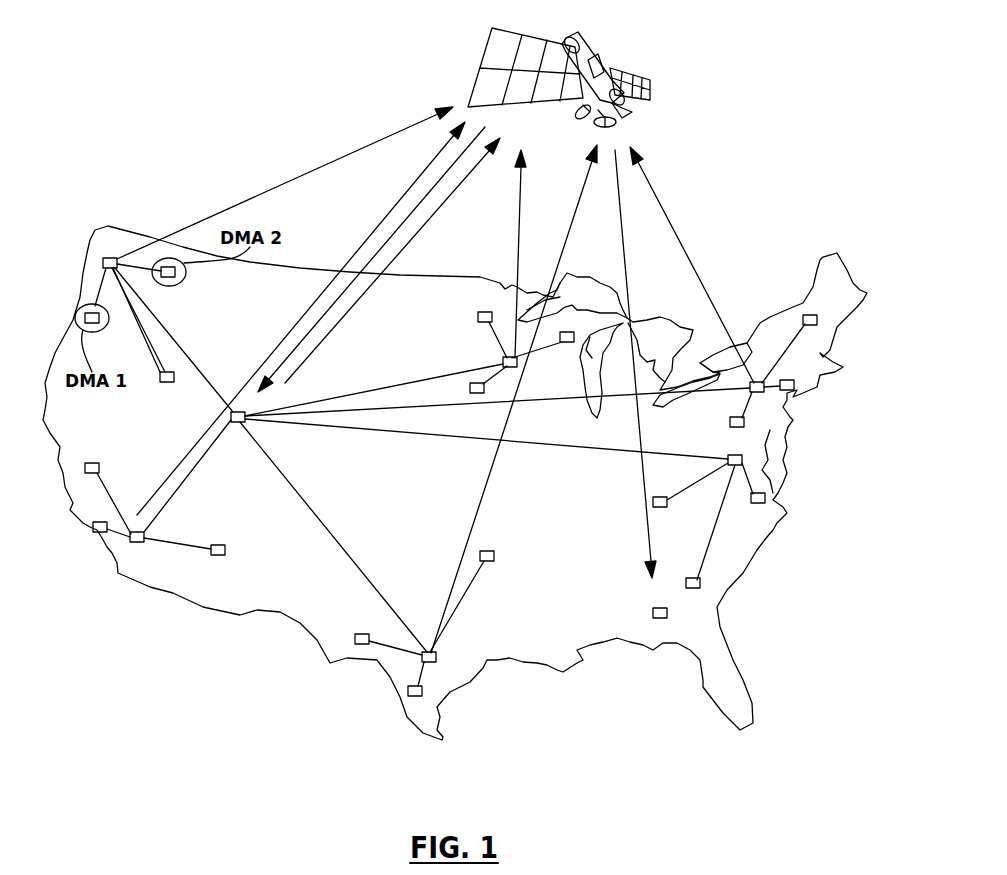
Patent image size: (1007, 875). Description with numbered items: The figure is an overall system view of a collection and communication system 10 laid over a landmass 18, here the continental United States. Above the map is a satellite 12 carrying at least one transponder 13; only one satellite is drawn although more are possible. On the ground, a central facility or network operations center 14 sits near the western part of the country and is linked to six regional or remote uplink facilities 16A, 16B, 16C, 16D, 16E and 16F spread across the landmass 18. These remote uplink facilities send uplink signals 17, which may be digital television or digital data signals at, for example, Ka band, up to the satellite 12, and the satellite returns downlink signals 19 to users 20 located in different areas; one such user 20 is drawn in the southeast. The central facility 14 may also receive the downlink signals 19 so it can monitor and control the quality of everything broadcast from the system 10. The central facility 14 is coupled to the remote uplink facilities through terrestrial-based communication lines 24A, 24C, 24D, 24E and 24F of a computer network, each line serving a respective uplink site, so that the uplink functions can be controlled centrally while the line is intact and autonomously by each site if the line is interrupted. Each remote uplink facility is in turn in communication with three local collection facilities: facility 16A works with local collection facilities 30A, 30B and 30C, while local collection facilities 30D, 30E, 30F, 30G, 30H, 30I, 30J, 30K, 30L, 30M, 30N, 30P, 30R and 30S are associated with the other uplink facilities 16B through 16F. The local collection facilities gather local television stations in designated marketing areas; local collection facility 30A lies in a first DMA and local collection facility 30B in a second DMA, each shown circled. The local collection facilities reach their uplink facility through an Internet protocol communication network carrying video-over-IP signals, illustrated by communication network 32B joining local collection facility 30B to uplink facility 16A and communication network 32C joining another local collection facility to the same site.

The collection and communication system 10 is at (143, 152).
The satellite 12 is at (601, 56).
The transponder 13 is at (596, 57).
The central facility or network operations center 14 is at (238, 423).
The regional or remote uplink facility 16A is at (110, 257).
The regional or remote uplink facility 16B is at (137, 543).
The regional or remote uplink facility 16C is at (502, 362).
The regional or remote uplink facility 16D is at (764, 385).
The regional or remote uplink facility 16E is at (730, 457).
The regional or remote uplink facility 16F is at (437, 657).
The uplink signals 17 is at (287, 185).
The landmass 18 is at (753, 688).
The downlink signals 19 is at (427, 195).
The users 20 is at (657, 607).
The communication line 24A is at (171, 335).
The communication line 24C is at (351, 393).
The communication line 24D is at (553, 401).
The communication line 24E is at (562, 447).
The communication line 24F is at (318, 523).
The local collection facility 30A is at (103, 329).
The local collection facility 30B is at (187, 273).
The local collection facility 30C is at (166, 384).
The local collection facility 30D is at (97, 462).
The local collection facility 30E is at (225, 557).
The local collection facility 30F is at (99, 533).
The local collection facility 30G is at (477, 318).
The local collection facility 30H is at (567, 343).
The local collection facility 30I is at (477, 394).
The local collection facility 30J is at (362, 633).
The local collection facility 30K is at (493, 550).
The local collection facility 30L is at (407, 691).
The local collection facility 30M is at (803, 319).
The local collection facility 30N is at (792, 391).
The local collection facility 30P is at (730, 426).
The local collection facility 30R is at (701, 583).
The local collection facility 30S is at (662, 508).
The communication network 32B is at (126, 262).
The communication network 32C is at (159, 356).